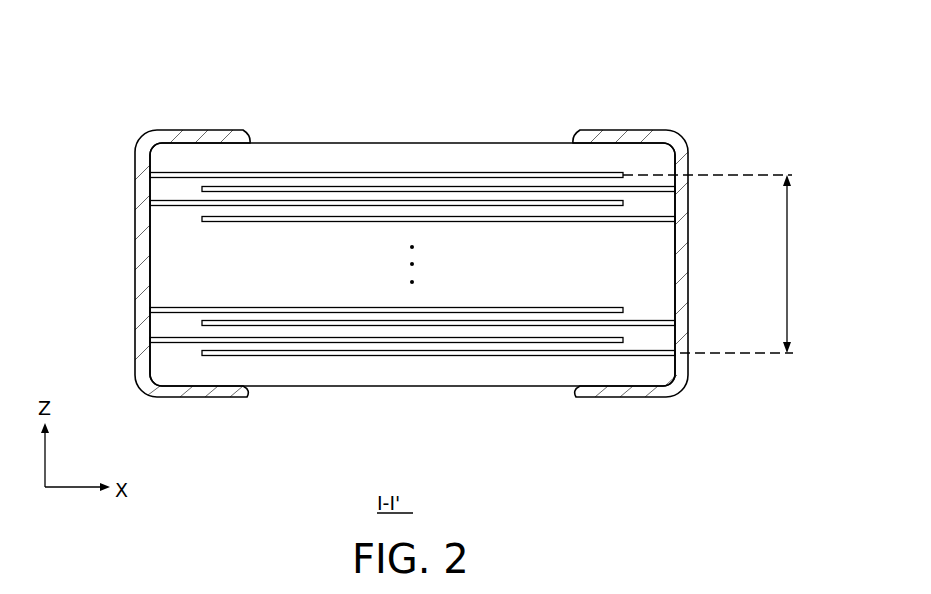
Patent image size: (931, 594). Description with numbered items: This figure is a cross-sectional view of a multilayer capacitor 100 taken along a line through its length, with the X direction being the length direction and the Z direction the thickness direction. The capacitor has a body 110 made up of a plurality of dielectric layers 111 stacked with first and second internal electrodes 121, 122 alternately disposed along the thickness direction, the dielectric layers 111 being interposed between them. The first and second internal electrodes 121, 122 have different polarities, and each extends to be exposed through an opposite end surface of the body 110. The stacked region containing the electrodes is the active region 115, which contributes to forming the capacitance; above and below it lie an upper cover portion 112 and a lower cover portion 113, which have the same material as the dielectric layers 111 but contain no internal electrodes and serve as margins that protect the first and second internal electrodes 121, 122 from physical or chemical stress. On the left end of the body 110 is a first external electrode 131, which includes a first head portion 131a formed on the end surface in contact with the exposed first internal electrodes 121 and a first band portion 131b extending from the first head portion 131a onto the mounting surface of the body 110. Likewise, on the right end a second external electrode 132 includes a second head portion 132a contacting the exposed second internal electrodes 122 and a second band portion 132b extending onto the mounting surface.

The multilayer capacitor 100 is at (395, 31).
The body 110 is at (364, 143).
The dielectric layer 111 is at (650, 205).
The upper cover portion 112 is at (474, 158).
The lower cover portion 113 is at (475, 375).
The active region 115 is at (729, 264).
The first internal electrode 121 is at (176, 206).
The second internal electrode 122 is at (648, 220).
The first external electrode 131 is at (235, 55).
The first head portion 131a is at (136, 163).
The first band portion 131b is at (210, 130).
The second external electrode 132 is at (732, 55).
The second head portion 132a is at (688, 164).
The second band portion 132b is at (613, 130).